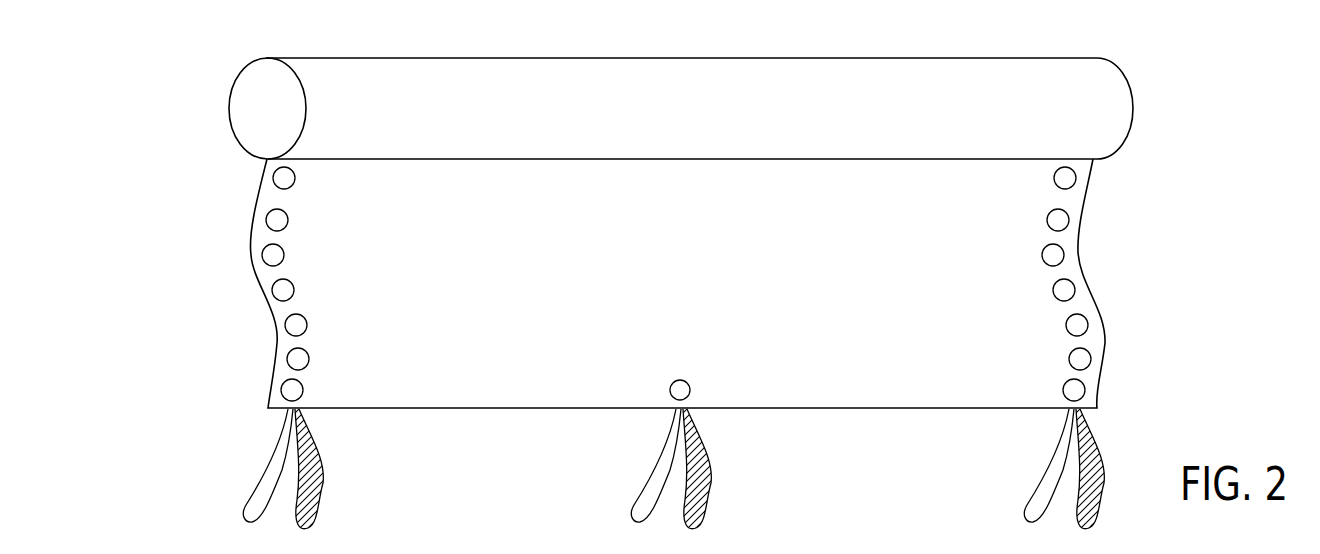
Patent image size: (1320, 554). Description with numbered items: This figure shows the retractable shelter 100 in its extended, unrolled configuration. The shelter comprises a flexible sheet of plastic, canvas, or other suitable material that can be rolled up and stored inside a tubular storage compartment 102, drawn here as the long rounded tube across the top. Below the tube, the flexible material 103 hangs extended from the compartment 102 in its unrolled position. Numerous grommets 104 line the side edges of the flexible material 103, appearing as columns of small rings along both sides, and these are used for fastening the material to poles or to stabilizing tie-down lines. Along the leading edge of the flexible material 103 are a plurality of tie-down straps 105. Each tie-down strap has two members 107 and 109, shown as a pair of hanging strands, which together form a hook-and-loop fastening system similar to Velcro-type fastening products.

The retractable shelter 100 is at (902, 58).
The tubular storage compartment 102 is at (366, 58).
The flexible material 103 is at (727, 302).
The grommets 104 is at (288, 318).
The tie-down straps 105 is at (321, 451).
The member 107 is at (243, 511).
The member 109 is at (318, 508).